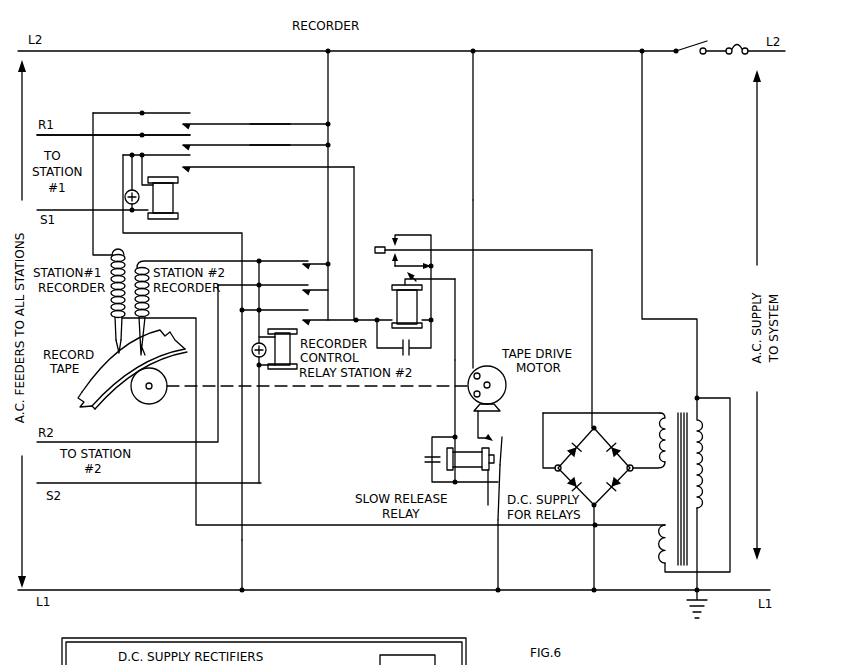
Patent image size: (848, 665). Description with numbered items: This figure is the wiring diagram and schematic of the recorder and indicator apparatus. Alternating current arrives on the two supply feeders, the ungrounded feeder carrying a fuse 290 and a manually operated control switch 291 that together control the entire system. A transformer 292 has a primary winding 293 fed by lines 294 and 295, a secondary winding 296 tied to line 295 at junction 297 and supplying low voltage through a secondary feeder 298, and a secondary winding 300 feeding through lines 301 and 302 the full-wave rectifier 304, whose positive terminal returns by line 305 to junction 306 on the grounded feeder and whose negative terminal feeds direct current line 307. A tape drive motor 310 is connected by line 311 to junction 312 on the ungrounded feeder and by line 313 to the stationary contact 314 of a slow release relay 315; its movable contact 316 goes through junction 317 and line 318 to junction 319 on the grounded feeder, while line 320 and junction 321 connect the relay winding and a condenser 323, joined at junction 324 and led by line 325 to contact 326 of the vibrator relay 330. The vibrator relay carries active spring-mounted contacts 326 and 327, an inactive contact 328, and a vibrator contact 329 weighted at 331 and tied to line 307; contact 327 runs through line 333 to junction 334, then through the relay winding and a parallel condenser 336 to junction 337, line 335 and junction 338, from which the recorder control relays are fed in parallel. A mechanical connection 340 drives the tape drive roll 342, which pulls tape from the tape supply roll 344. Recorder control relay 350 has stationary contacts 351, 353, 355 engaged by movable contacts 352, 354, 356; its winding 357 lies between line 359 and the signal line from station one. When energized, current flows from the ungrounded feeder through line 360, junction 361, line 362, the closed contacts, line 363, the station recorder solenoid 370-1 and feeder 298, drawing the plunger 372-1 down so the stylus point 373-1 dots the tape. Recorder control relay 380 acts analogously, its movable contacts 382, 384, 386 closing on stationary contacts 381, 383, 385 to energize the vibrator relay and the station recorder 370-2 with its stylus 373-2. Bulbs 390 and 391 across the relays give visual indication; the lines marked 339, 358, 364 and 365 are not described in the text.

The fuse 290 is at (737, 56).
The manually operated control switch 291 is at (690, 42).
The transformer 292 is at (680, 400).
The primary winding 293 is at (703, 448).
The line 294 is at (698, 548).
The line 295 is at (644, 156).
The secondary winding 296 is at (660, 548).
The junction 297 is at (699, 396).
The secondary feeder 298 is at (184, 318).
The secondary winding 300 is at (665, 411).
The line 301 is at (627, 401).
The line 302 is at (645, 468).
The full-wave rectifier 304 is at (607, 434).
The line 305 is at (594, 563).
The junction 306 is at (597, 592).
The line 307 is at (593, 347).
The tape drive motor 310 is at (515, 385).
The line 311 is at (475, 327).
The junction 312 is at (474, 50).
The line 313 is at (492, 424).
The stationary contact 314 is at (498, 435).
The slow release relay 315 is at (438, 468).
The movable contact 316 is at (503, 443).
The junction 317 is at (499, 480).
The line 318 is at (498, 545).
The junction 319 is at (497, 587).
The line 320 is at (483, 485).
The junction 321 is at (456, 483).
The condenser 323 is at (427, 457).
The junction 324 is at (452, 434).
The line 325 is at (455, 357).
The active spring-mounted contact 326 is at (399, 258).
The active spring-mounted contact 327 is at (402, 274).
The inactive spring-mounted contact 328 is at (395, 234).
The vibrator contact 329 is at (385, 252).
The vibrator relay 330 is at (427, 301).
The weight 331 is at (382, 246).
The line 333 is at (426, 268).
The junction 334 is at (432, 321).
The line 335 is at (390, 319).
The condenser 336 is at (407, 347).
The junction 337 is at (376, 321).
The junction 338 is at (353, 312).
The conductor 339 is at (355, 181).
The mechanical connection 340 is at (348, 390).
The tape drive roll 342 is at (149, 404).
The tape supply roll 344 is at (100, 374).
The recorder control relay 350 is at (186, 195).
The stationary contact 351 is at (189, 165).
The movable contact 352 is at (168, 155).
The stationary contact 353 is at (189, 144).
The movable contact 354 is at (170, 135).
The stationary contact 355 is at (189, 122).
The movable contact 356 is at (159, 112).
The winding 357 is at (181, 188).
The conductor 358 is at (244, 588).
The line 359 is at (122, 177).
The line 360 is at (330, 93).
The junction 361 is at (330, 124).
The line 362 is at (261, 123).
The line 363 is at (93, 238).
The junction 364 is at (330, 145).
The conductor 365 is at (261, 144).
The station recorder solenoid 370-1 is at (108, 301).
The station recorder 370-2 is at (152, 301).
The solenoid plunger 372-1 is at (113, 329).
The stylus point 373-1 is at (113, 350).
The stylus 373-2 is at (148, 351).
The recorder control relay 380 is at (283, 372).
The stationary contact 381 is at (307, 317).
The movable contact 382 is at (291, 308).
The stationary contact 383 is at (313, 282).
The movable contact 384 is at (290, 283).
The stationary contact 385 is at (313, 256).
The movable contact 386 is at (289, 259).
The bulb 390 is at (251, 351).
The bulb 391 is at (125, 197).